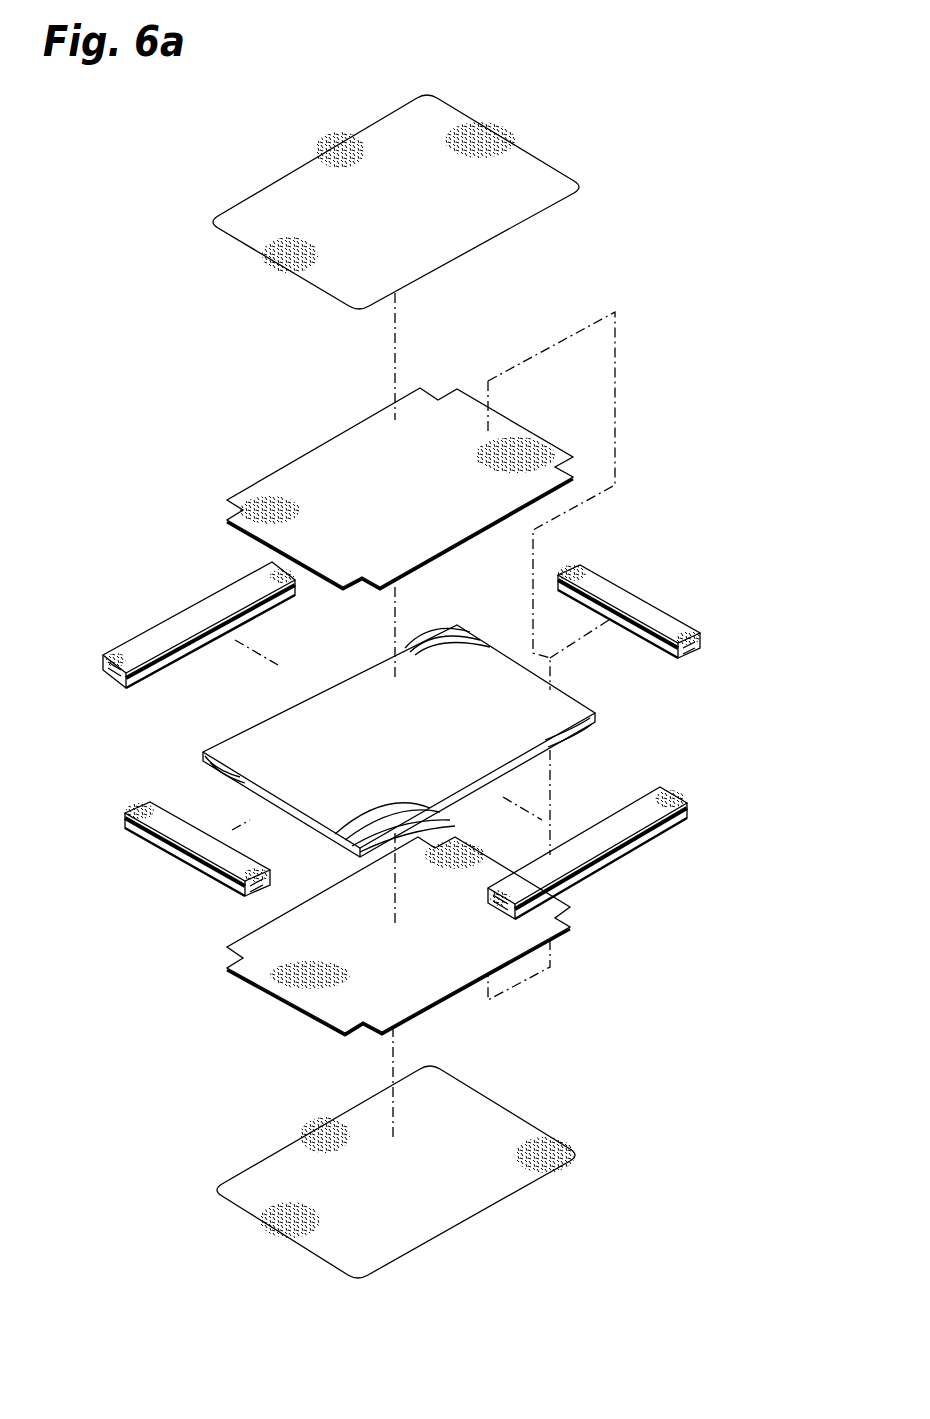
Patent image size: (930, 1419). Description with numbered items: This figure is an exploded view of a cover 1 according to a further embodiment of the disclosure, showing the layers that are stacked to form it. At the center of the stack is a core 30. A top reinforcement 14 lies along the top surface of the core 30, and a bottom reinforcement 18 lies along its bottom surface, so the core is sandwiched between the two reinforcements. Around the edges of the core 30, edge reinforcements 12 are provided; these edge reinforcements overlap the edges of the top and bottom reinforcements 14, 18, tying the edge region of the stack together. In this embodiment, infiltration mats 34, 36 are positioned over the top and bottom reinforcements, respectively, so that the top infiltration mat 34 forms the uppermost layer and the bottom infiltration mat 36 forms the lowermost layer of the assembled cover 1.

The cover 1 is at (106, 292).
The edge reinforcements 12 is at (168, 620).
The top reinforcement 14 is at (298, 460).
The bottom reinforcement 18 is at (250, 987).
The core 30 is at (242, 724).
The infiltration mat 34 is at (287, 172).
The infiltration mat 36 is at (250, 1165).